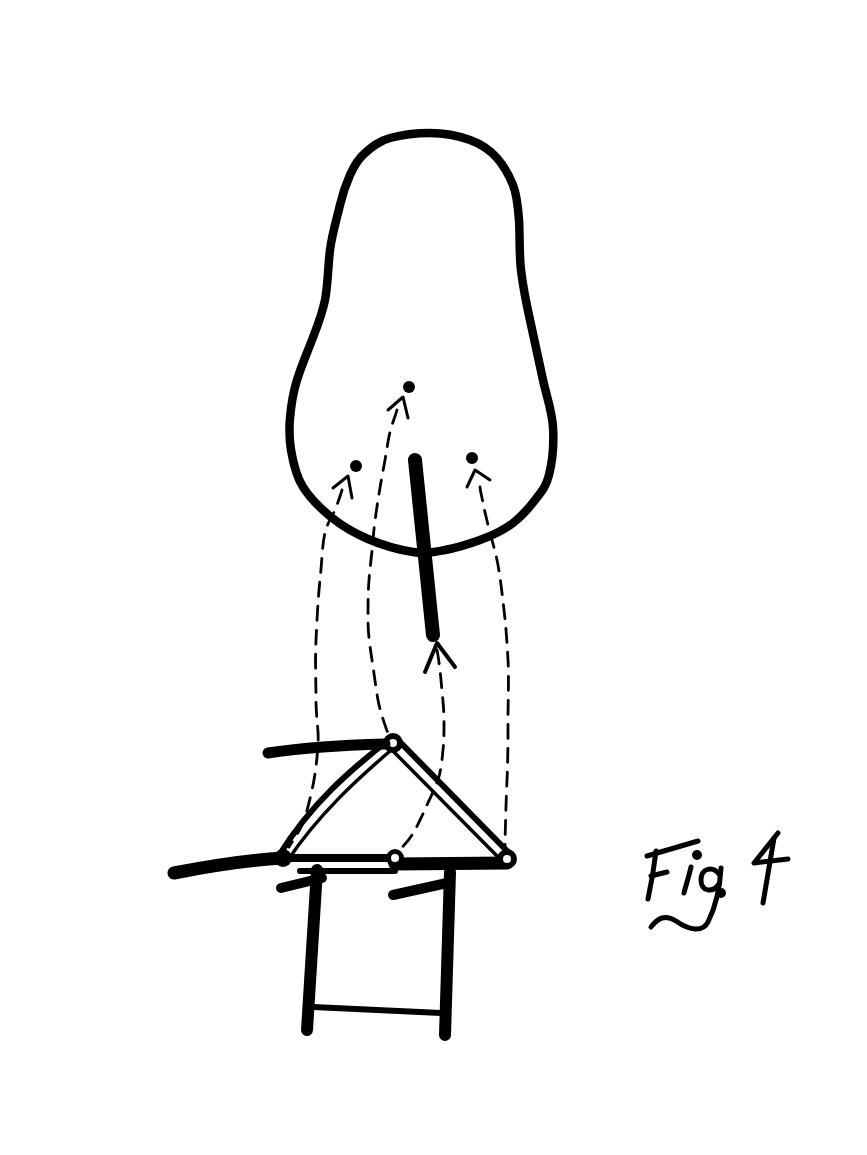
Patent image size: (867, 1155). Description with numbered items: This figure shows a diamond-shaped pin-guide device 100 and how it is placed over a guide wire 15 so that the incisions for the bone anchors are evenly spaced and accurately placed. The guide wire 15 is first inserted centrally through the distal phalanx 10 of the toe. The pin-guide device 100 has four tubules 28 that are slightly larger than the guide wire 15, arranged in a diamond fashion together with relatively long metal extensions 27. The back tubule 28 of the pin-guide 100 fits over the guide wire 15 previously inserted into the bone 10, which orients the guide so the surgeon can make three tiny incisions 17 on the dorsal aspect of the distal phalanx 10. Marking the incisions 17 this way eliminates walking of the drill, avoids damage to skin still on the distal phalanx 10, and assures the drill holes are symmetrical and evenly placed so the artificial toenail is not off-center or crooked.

The distal phalanx 10 is at (473, 185).
The guide wire 15 is at (427, 452).
The incisions 17 is at (478, 442).
The pin-guide device 100 is at (477, 783).
The metal extensions 27 is at (253, 757).
The tubules 28 is at (273, 887).